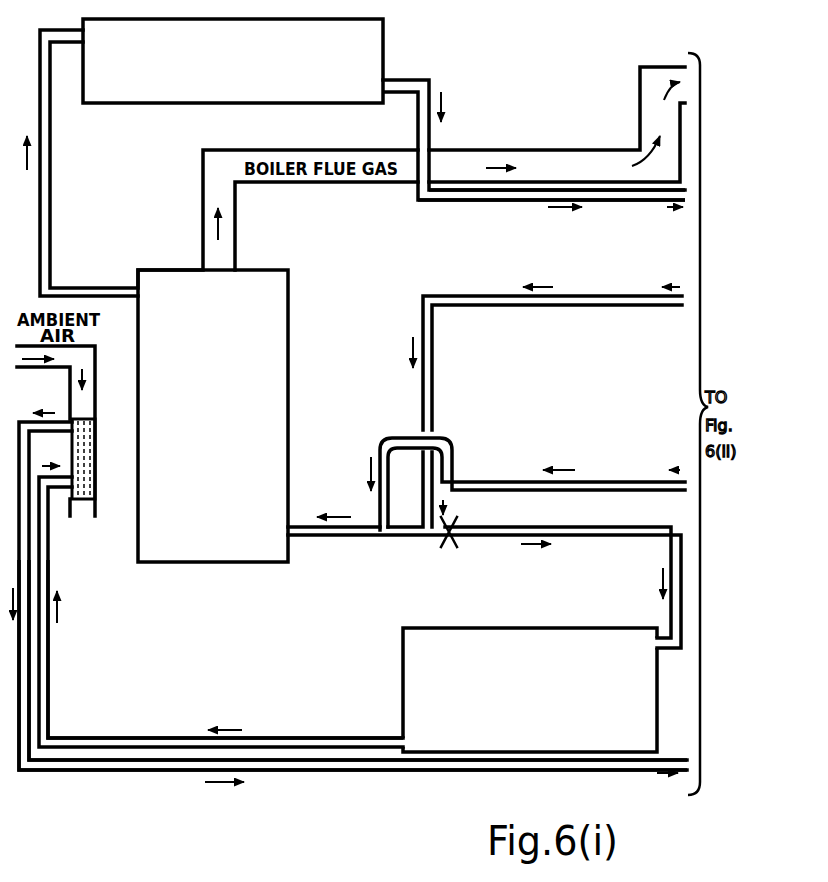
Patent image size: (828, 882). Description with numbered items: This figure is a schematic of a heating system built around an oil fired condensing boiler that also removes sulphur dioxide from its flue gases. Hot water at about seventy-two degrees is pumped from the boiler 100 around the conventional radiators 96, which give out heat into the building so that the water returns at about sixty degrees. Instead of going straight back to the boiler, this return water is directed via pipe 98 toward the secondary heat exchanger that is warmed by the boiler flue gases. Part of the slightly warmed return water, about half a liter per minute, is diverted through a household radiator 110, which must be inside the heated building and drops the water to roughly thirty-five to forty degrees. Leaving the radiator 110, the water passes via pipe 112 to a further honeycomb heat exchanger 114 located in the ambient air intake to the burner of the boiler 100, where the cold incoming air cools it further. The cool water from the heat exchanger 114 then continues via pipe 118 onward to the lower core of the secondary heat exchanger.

The radiators 96 is at (231, 69).
The pipe 98 is at (471, 202).
The boiler 100 is at (223, 413).
The household radiator 110 is at (546, 692).
The pipe 112 is at (52, 708).
The heat exchanger 114 is at (95, 462).
The pipe 118 is at (24, 648).